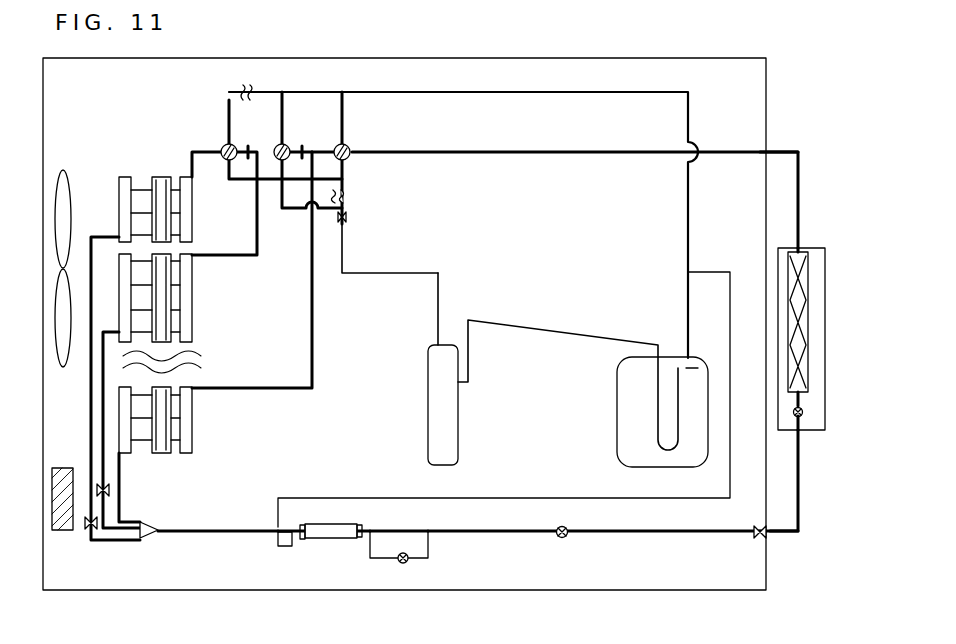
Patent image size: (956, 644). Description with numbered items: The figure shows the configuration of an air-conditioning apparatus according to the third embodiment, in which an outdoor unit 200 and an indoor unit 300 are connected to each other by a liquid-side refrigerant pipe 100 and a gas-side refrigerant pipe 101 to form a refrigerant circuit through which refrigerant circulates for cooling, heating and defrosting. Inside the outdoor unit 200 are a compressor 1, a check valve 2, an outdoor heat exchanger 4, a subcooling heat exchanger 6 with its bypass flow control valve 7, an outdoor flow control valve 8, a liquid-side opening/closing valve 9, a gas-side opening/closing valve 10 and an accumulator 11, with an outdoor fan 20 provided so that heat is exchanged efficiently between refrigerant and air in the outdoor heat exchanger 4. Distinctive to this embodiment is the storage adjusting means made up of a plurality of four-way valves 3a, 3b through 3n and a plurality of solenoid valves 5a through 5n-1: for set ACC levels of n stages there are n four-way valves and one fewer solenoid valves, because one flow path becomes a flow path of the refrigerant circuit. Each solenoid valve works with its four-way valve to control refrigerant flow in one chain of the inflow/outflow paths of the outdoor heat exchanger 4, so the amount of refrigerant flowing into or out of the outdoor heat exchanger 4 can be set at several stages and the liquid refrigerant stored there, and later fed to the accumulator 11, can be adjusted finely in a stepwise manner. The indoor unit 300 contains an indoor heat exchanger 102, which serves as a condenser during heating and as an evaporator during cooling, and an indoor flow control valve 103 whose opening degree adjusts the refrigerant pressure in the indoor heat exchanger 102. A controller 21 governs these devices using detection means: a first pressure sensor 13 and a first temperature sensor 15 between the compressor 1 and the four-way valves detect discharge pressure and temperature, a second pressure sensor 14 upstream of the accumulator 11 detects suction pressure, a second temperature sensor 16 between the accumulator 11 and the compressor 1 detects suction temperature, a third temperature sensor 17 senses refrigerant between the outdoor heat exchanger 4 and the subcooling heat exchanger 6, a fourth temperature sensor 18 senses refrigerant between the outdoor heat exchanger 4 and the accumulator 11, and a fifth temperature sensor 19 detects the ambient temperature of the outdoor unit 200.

The compressor 1 is at (460, 432).
The check valve 2 is at (349, 216).
The four-way valve 3a is at (350, 148).
The four-way valve 3b is at (288, 143).
The four-way valve 3n is at (234, 143).
The outdoor heat exchanger 4 is at (119, 178).
The outdoor heat exchanger capacity control solenoid valve 5a is at (109, 486).
The outdoor heat exchanger capacity control solenoid valve 5n-1 is at (86, 530).
The subcooling heat exchanger 6 is at (320, 528).
The subcooling heat exchanger bypass flow control valve 7 is at (396, 560).
The outdoor flow control valve 8 is at (558, 538).
The liquid-side opening/closing valve 9 is at (756, 536).
The gas-side opening/closing valve 10 is at (757, 153).
The accumulator 11 is at (617, 396).
The first pressure sensor 13 is at (343, 255).
The second pressure sensor 14 is at (690, 272).
The first temperature sensor 15 is at (416, 346).
The second temperature sensor 16 is at (482, 353).
The third temperature sensor 17 is at (164, 527).
The fourth temperature sensor 18 is at (640, 100).
The fifth temperature sensor 19 is at (114, 120).
The outdoor fan 20 is at (72, 194).
The controller 21 is at (58, 467).
The liquid-side refrigerant pipe 100 is at (790, 536).
The gas-side refrigerant pipe 101 is at (782, 152).
The indoor heat exchanger 102 is at (795, 248).
The indoor flow control valve 103 is at (794, 418).
The outdoor unit 200 is at (658, 592).
The indoor unit 300 is at (808, 436).